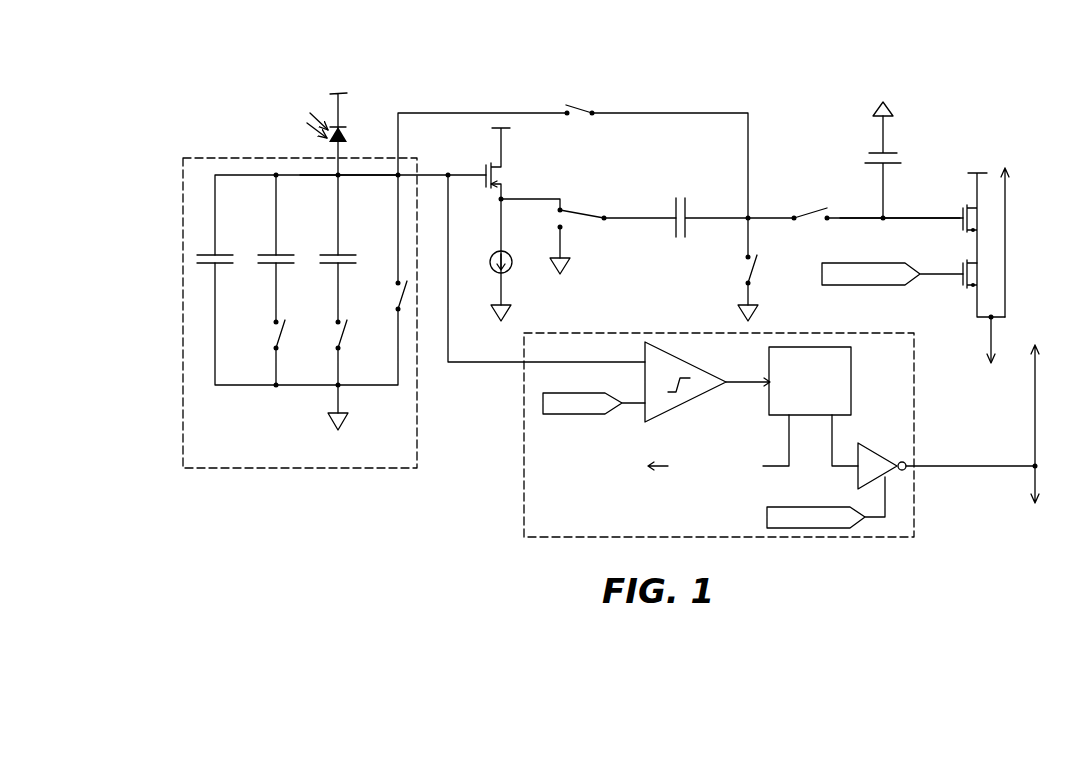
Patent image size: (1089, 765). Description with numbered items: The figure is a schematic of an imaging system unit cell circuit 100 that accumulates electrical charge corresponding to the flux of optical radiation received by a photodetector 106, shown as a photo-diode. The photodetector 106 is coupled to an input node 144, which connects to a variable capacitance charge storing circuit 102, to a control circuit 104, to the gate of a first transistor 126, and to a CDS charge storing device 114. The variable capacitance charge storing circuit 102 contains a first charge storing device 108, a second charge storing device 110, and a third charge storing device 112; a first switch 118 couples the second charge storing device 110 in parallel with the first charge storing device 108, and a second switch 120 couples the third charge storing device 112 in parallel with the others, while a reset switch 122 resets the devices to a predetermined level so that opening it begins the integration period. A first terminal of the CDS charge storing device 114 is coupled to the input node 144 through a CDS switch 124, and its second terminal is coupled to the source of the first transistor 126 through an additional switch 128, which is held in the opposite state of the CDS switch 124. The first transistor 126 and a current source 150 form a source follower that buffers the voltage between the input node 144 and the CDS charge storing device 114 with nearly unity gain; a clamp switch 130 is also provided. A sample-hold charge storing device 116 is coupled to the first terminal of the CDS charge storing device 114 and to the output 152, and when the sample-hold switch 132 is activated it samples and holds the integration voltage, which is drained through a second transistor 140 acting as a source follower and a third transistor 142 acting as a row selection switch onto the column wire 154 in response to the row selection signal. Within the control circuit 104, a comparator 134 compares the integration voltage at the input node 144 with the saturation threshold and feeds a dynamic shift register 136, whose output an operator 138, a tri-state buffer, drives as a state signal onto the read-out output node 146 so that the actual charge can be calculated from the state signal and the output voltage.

The unit cell circuit 100 is at (512, 65).
The variable capacitance charge storing circuit 102 is at (246, 156).
The control circuit 104 is at (524, 488).
The photodetector 106 is at (328, 128).
The first charge storing device 108 is at (227, 254).
The second charge storing device 110 is at (288, 254).
The third charge storing device 112 is at (349, 254).
The CDS charge storing device 114 is at (674, 208).
The sample-hold charge storing device 116 is at (894, 150).
The first switch 118 is at (276, 321).
The second switch 120 is at (338, 321).
The reset switch 122 is at (398, 282).
The CDS switch 124 is at (581, 107).
The first transistor 126 is at (500, 180).
The additional switch 128 is at (590, 222).
The clamp switch 130 is at (748, 268).
The sample-hold switch 132 is at (828, 222).
The comparator 134 is at (643, 410).
The dynamic shift register 136 is at (822, 333).
The operator 138 is at (885, 447).
The second transistor 140 is at (968, 232).
The third transistor 142 is at (968, 286).
The input node 144 is at (337, 173).
The read-out output node 146 is at (1033, 470).
The current source 150 is at (496, 250).
The output 152 is at (900, 218).
The column wire 154 is at (1007, 202).